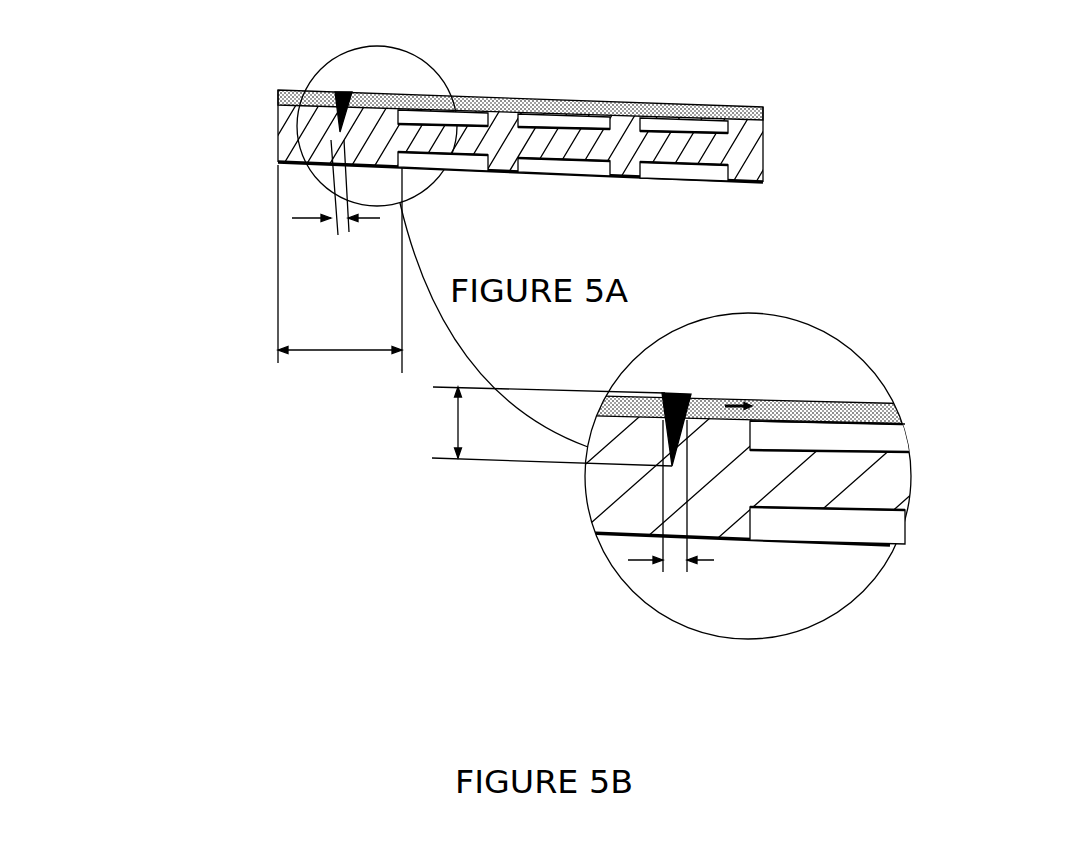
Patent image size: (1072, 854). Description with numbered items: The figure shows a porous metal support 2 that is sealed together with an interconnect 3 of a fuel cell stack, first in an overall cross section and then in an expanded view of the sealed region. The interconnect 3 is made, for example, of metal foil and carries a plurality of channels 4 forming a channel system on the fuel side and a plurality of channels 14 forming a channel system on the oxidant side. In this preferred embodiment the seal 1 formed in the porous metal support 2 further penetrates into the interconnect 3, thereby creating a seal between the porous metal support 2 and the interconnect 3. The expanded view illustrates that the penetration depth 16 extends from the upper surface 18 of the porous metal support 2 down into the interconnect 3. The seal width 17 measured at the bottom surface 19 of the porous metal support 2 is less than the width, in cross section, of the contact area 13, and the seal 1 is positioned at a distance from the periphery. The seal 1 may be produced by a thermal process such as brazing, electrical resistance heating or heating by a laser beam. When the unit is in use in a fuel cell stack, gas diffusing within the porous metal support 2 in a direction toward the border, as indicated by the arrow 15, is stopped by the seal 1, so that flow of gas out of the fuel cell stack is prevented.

In FIG. 5B, the seal 1 is at (665, 395).
In FIG. 5B, the porous metal support 2 is at (860, 402).
In FIG. 5B, the interconnect 3 is at (702, 518).
In FIG. 5A, the channels 4 is at (673, 123).
In FIG. 5B, the channels 4 is at (888, 438).
In FIG. 5A, the contact area 13 is at (328, 350).
In FIG. 5A, the channels 14 is at (678, 170).
In FIG. 5B, the channels 14 is at (825, 525).
In FIG. 5B, the arrow 15 is at (780, 402).
In FIG. 5B, the penetration depth 16 is at (457, 418).
In FIG. 5A, the seal width 17 is at (337, 218).
In FIG. 5B, the seal width 17 is at (679, 562).
In FIG. 5B, the upper surface 18 is at (720, 400).
In FIG. 5B, the bottom surface 19 is at (800, 423).